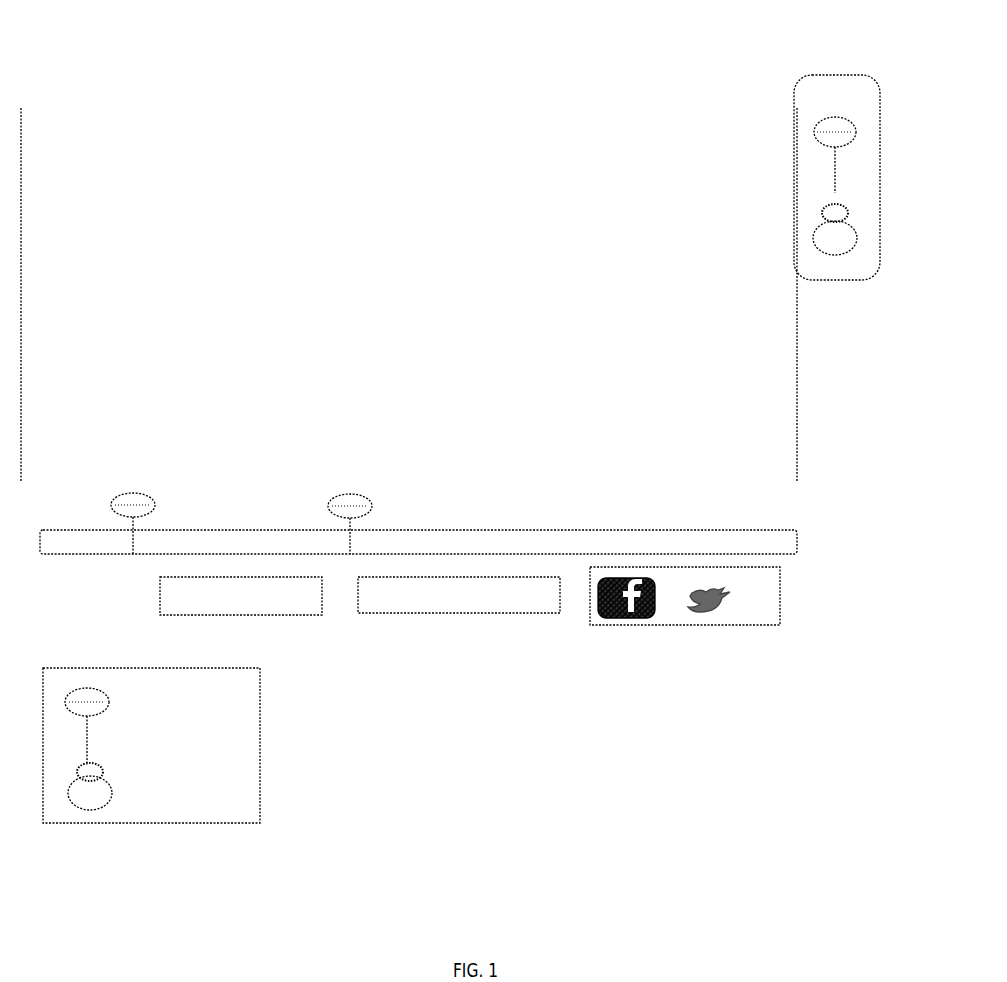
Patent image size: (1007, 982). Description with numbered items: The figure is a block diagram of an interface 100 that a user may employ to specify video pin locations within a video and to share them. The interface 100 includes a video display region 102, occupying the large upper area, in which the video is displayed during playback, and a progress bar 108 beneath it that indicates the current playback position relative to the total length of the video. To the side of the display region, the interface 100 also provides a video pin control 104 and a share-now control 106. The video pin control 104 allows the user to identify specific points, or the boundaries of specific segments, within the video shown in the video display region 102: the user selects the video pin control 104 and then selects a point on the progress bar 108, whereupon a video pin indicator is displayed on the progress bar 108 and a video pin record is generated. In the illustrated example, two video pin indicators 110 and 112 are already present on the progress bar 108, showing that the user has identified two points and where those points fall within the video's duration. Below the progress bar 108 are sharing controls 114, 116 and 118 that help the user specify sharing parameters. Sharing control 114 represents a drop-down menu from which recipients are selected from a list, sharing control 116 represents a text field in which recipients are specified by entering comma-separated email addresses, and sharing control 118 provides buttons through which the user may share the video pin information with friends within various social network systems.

The interface 100 is at (147, 76).
The video display region 102 is at (405, 173).
The video pin control 104 is at (823, 109).
The share-now control 106 is at (800, 232).
The progress bar 108 is at (860, 523).
The video pin indicator 110 is at (163, 522).
The video pin indicator 112 is at (373, 523).
The sharing control 114 is at (303, 620).
The sharing control 116 is at (490, 620).
The sharing control 118 is at (687, 633).